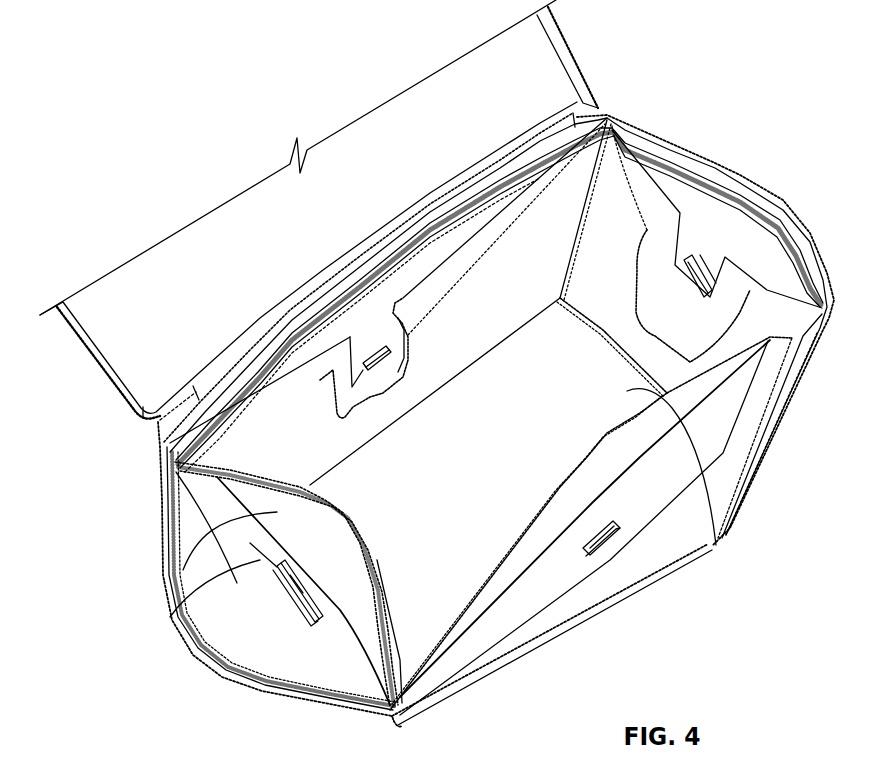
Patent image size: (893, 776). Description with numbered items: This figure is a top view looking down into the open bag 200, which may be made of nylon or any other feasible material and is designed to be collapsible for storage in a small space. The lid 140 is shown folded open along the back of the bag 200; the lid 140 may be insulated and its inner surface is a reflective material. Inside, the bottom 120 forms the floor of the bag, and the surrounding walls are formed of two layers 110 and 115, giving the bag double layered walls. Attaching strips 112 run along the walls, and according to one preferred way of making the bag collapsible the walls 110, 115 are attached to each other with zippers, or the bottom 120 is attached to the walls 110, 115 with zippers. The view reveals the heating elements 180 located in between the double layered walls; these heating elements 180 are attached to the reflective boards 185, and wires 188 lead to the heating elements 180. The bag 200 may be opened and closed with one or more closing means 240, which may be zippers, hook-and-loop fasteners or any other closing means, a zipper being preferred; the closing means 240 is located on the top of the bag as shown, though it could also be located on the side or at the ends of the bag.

The bag 200 is at (150, 107).
The wall layer 110 is at (760, 197).
The attaching strips 112 is at (683, 170).
The wall layer 115 is at (627, 192).
The bottom 120 is at (710, 543).
The lid 140 is at (540, 60).
The heating elements 180 is at (700, 260).
The reflective boards 185 is at (350, 652).
The wires 188 is at (173, 617).
The closing means 240 is at (811, 230).